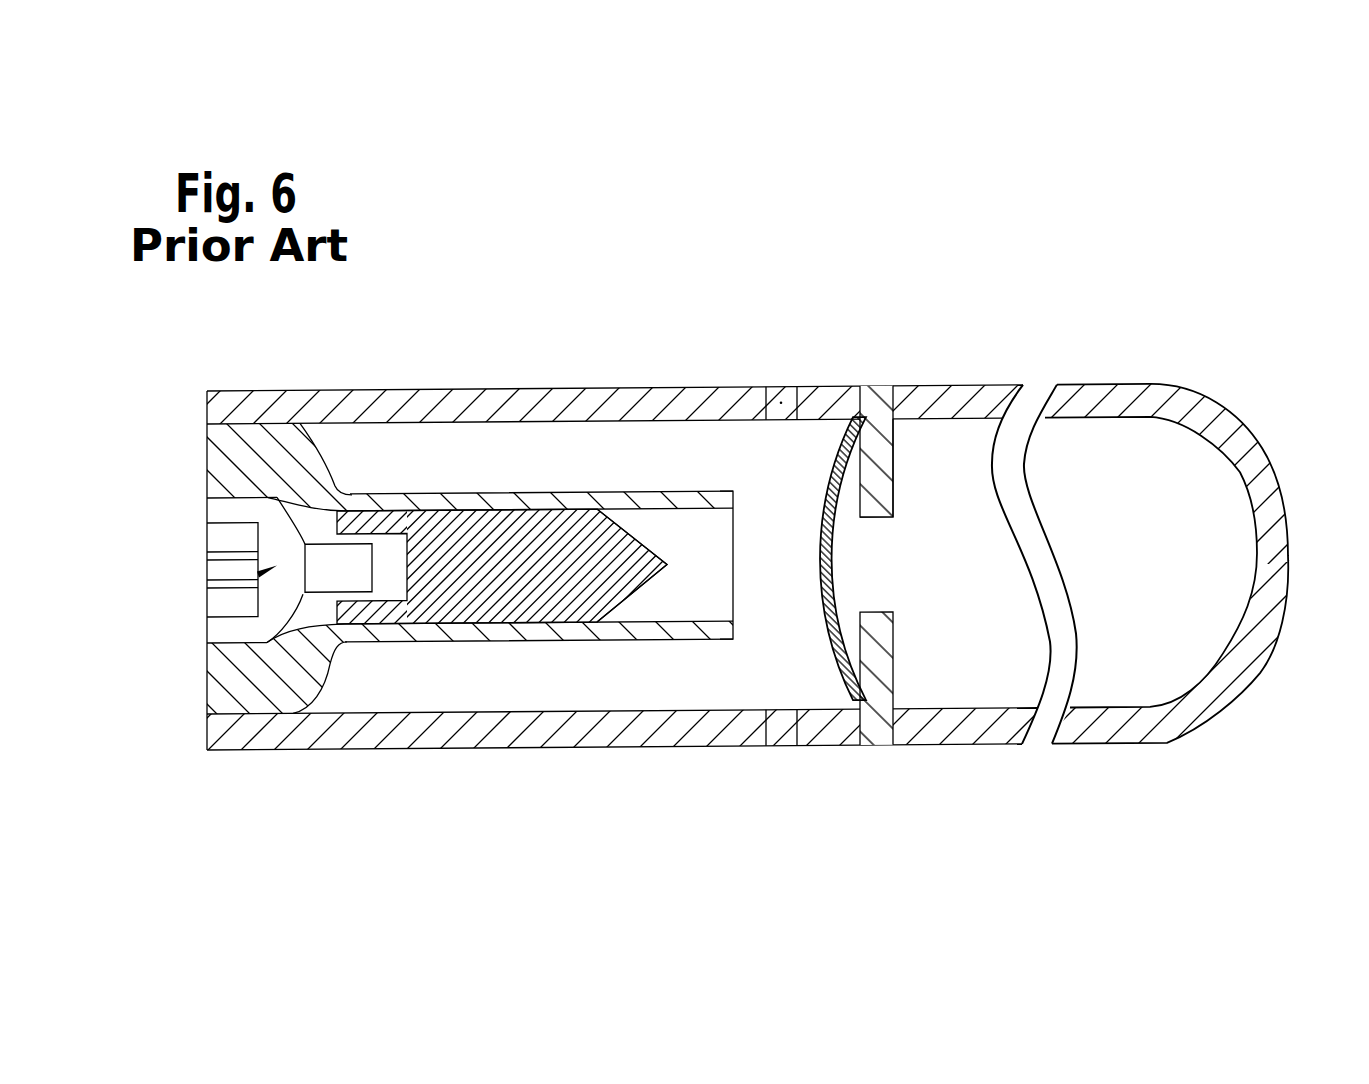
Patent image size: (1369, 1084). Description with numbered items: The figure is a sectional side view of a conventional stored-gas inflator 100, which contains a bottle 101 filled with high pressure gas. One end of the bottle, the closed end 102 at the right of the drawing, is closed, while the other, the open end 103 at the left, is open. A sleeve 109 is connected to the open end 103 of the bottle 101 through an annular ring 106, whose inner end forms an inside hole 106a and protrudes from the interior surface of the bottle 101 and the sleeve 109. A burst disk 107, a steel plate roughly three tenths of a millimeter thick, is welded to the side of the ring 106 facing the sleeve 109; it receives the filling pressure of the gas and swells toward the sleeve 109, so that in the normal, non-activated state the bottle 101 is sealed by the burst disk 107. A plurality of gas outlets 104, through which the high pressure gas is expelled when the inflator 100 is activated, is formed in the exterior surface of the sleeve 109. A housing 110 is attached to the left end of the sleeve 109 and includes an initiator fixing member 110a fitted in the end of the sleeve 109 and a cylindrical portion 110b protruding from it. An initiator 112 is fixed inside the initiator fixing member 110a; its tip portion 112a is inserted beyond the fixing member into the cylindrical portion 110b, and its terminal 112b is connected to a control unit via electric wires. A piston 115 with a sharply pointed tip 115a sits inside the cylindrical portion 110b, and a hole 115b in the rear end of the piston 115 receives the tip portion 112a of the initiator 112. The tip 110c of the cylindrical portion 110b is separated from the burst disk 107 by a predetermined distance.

The inflator 100 is at (703, 495).
The bottle 101 is at (962, 386).
The closed end of the bottle 102 is at (1256, 447).
The open end of the bottle 103 is at (924, 680).
The gas outlets 104 is at (790, 393).
The annular ring 106 is at (878, 450).
The inside hole 106a is at (880, 520).
The burst disk 107 is at (827, 632).
The sleeve 109 is at (608, 392).
The housing 110 is at (477, 650).
The initiator fixing member 110a is at (253, 693).
The cylindrical portion 110b is at (423, 635).
The tip of the cylindrical portion 110c is at (734, 494).
The initiator 112 is at (255, 579).
The tip portion of the initiator 112a is at (338, 567).
The terminal of the initiator 112b is at (207, 551).
The piston 115 is at (505, 512).
The sharply pointed tip 115a is at (627, 590).
The hole 115b is at (395, 570).